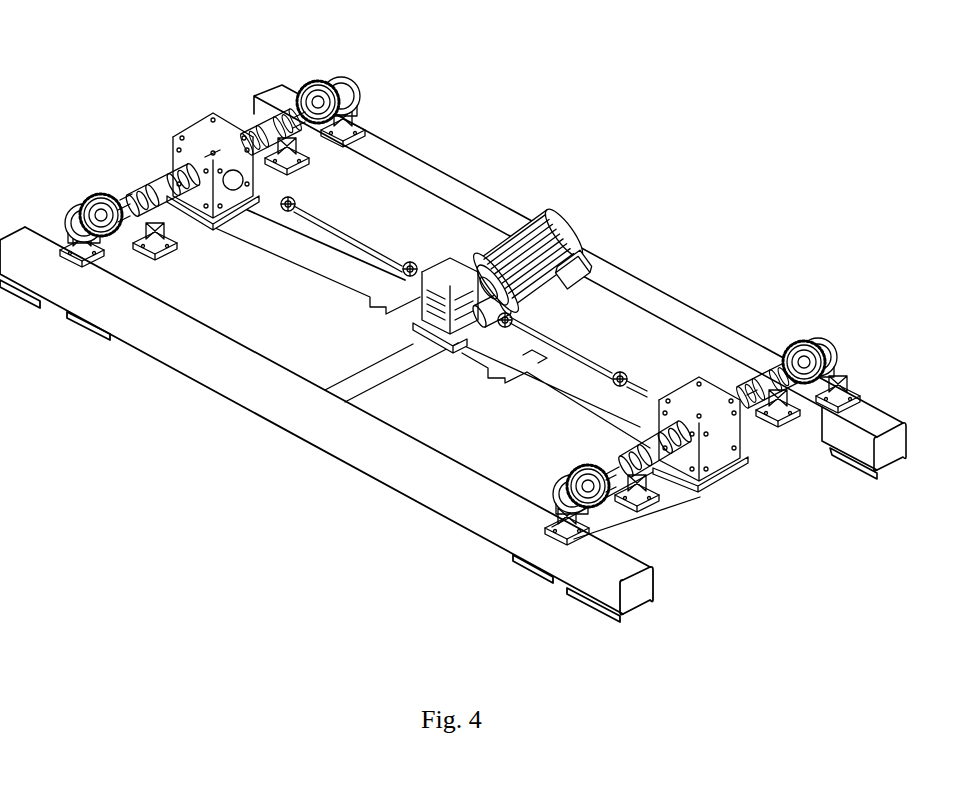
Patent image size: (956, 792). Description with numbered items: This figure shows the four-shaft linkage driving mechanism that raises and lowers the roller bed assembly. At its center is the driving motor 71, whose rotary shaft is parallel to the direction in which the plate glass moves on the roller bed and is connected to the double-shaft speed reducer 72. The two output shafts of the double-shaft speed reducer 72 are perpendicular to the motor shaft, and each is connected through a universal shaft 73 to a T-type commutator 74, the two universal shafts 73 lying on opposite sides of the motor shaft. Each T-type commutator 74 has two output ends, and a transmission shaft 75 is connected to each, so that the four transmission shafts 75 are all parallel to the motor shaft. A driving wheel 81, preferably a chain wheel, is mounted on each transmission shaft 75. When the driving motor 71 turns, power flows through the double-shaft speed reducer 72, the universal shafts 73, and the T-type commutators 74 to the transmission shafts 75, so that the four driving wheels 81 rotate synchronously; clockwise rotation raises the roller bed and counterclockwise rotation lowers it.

The driving motor 71 is at (563, 222).
The double-shaft speed reducer 72 is at (447, 263).
The universal shaft 73 is at (343, 233).
The T-type commutator 74 is at (210, 133).
The transmission shaft 75 is at (133, 207).
The driving wheel 81 is at (85, 200).